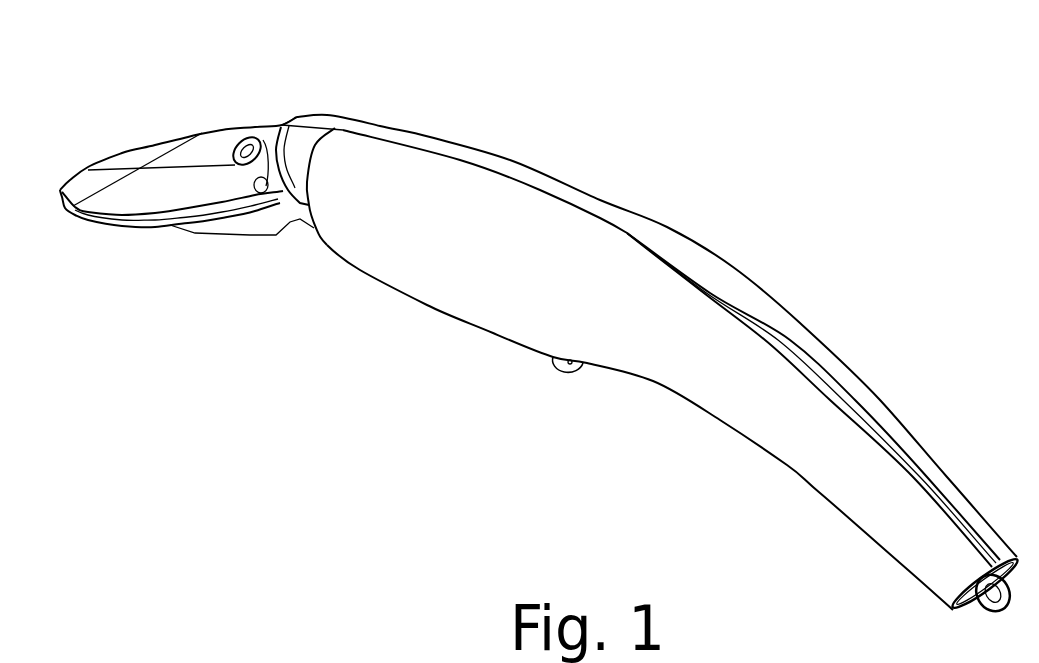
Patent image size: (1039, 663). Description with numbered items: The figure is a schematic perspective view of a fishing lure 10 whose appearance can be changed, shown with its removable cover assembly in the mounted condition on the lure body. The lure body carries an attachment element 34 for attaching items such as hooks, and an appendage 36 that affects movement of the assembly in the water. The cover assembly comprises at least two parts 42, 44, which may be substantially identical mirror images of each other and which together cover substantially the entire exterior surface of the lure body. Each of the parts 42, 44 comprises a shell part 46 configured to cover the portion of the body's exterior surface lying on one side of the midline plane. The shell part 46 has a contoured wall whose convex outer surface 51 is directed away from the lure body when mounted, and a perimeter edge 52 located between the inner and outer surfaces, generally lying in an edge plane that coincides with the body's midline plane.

The fishing lure 10 is at (544, 322).
The appendage 36 is at (202, 133).
The outer surface 51 is at (383, 218).
The part 44 is at (608, 218).
The shell part 46 is at (768, 320).
The perimeter edge 52 is at (868, 415).
The part 42 is at (480, 257).
The attachment element 34 is at (576, 372).